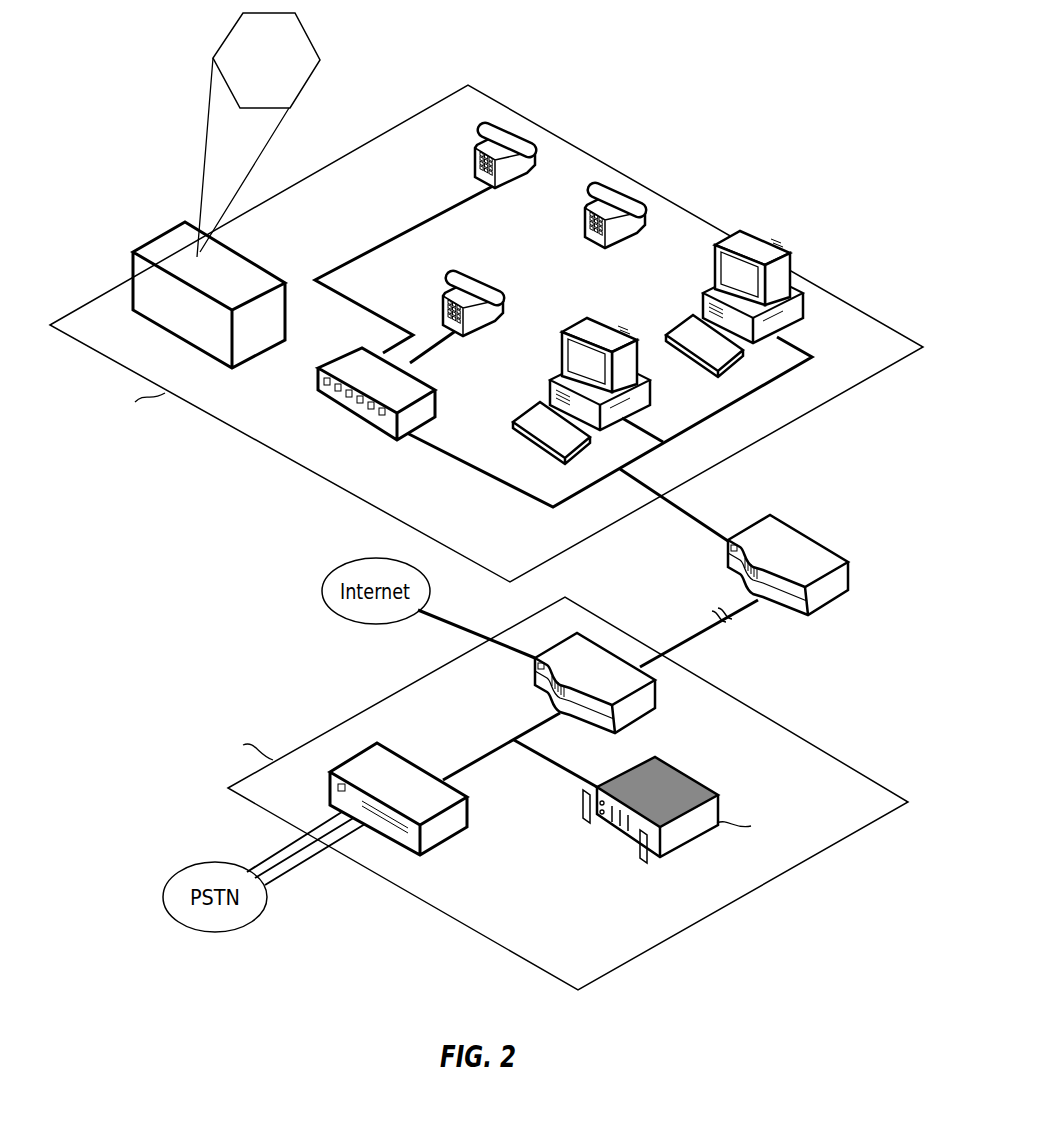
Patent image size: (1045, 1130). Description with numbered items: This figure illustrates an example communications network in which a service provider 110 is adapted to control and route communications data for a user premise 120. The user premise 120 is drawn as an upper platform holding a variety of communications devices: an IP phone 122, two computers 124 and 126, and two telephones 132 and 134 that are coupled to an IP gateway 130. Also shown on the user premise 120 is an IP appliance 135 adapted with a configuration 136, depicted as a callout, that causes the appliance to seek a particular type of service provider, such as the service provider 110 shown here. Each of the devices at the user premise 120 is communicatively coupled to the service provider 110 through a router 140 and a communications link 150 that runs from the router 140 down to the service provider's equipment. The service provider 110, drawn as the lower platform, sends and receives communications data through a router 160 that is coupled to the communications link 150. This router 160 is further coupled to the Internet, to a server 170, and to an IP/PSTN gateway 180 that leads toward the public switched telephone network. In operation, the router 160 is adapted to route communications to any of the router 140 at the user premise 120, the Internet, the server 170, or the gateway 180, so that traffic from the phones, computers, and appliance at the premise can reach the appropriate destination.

The service provider 110 is at (840, 758).
The user premise 120 is at (843, 395).
The IP phone 122 is at (655, 215).
The computer 124 is at (802, 302).
The computer 126 is at (652, 400).
The IP gateway 130 is at (435, 388).
The telephone 132 is at (507, 297).
The telephone 134 is at (548, 155).
The IP appliance 135 is at (252, 262).
The configuration 136 is at (312, 42).
The router 140 is at (838, 556).
The communications link 150 is at (687, 635).
The router 160 is at (653, 675).
The server 170 is at (713, 783).
The IP/PSTN gateway 180 is at (462, 790).